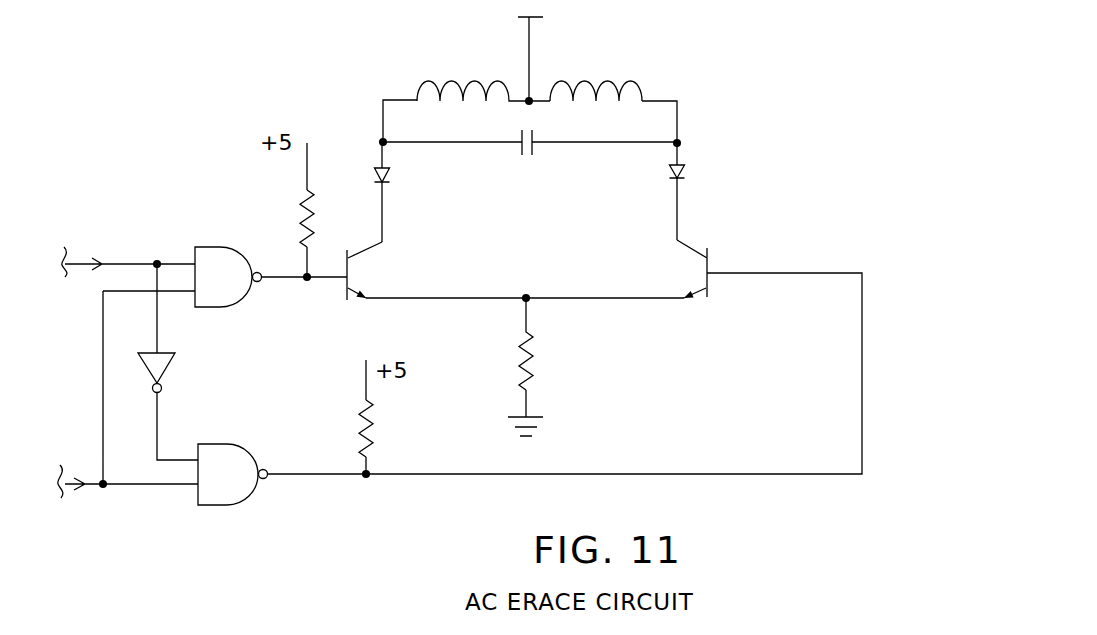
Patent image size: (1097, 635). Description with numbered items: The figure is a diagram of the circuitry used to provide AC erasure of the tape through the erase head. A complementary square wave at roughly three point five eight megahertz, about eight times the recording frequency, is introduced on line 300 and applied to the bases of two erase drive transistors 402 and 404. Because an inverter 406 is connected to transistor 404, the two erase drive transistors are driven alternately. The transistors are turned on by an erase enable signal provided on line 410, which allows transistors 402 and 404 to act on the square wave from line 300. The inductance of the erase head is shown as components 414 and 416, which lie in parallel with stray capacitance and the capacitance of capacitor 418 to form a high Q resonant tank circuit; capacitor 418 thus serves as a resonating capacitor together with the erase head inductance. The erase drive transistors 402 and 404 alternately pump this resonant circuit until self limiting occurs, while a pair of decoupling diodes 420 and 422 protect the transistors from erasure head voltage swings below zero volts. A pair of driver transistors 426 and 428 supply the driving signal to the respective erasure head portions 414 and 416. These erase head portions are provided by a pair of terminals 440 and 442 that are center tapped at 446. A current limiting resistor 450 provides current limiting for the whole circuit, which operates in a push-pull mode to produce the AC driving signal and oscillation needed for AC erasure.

The line 300 is at (82, 262).
The erase drive transistor 402 is at (228, 247).
The erase drive transistor 404 is at (248, 500).
The inverter 406 is at (162, 384).
The line 410 is at (72, 487).
The erase head portion 414 is at (453, 78).
The erase head portion 416 is at (617, 83).
The capacitor 418 is at (533, 148).
The decoupling diode 420 is at (387, 178).
The decoupling diode 422 is at (687, 170).
The driver transistor 426 is at (350, 270).
The driver transistor 428 is at (712, 260).
The terminal 440 is at (380, 142).
The terminal 442 is at (687, 143).
The center tap 446 is at (532, 87).
The current limiting resistor 450 is at (530, 350).